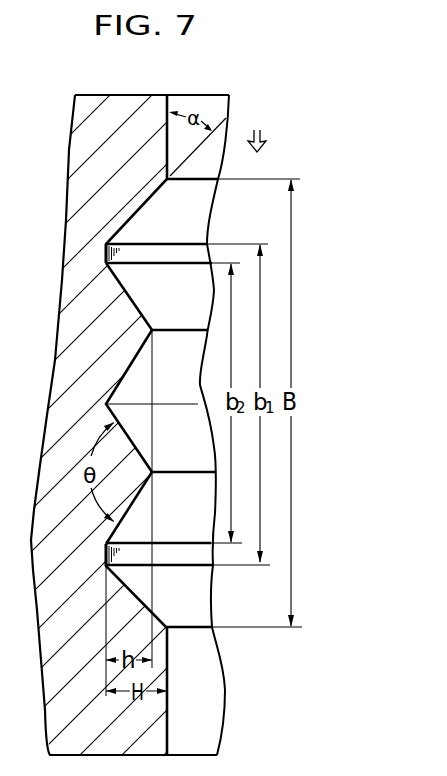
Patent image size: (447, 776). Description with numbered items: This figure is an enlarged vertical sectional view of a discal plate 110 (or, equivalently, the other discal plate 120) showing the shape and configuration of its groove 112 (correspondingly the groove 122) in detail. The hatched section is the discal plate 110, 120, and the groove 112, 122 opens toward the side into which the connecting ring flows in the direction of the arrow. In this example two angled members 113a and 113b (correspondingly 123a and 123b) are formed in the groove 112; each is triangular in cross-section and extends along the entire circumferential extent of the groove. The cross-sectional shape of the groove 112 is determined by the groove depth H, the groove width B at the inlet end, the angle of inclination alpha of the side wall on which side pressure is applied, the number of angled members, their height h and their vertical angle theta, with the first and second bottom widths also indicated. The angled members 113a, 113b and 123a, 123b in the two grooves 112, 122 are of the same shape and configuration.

The discal plate 110 is at (223, 388).
The discal plate 120 is at (94, 747).
The groove 112 is at (78, 407).
The groove 122 is at (106, 553).
The angled member 113a is at (152, 296).
The angled member 123a is at (139, 292).
The angled member 113b is at (160, 508).
The angled member 123b is at (146, 480).